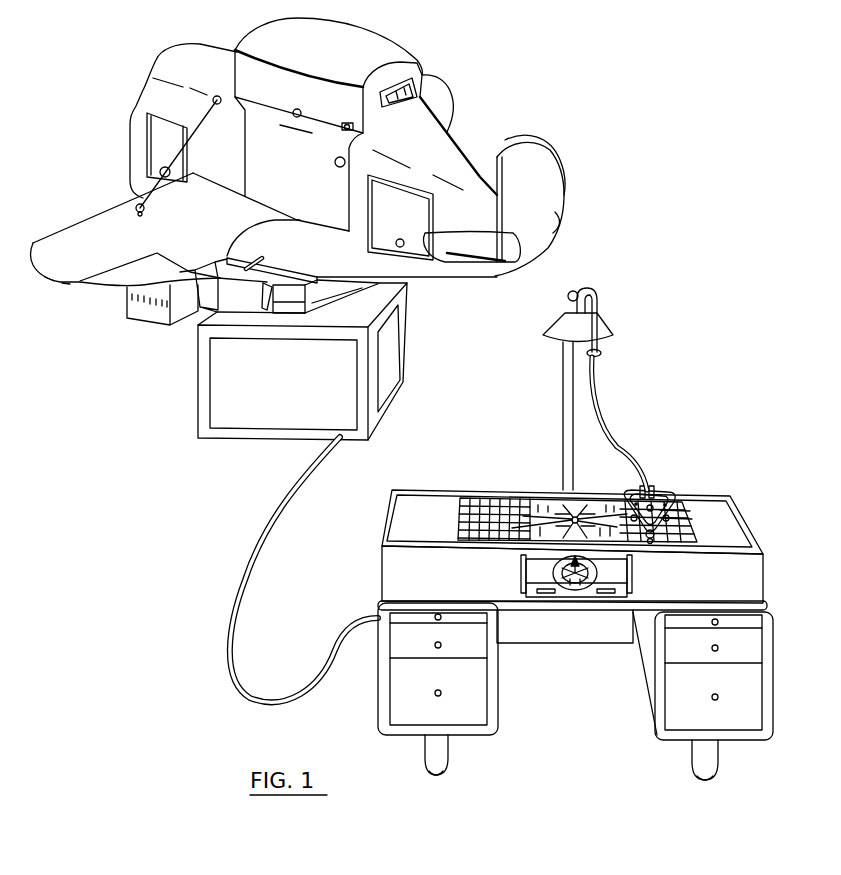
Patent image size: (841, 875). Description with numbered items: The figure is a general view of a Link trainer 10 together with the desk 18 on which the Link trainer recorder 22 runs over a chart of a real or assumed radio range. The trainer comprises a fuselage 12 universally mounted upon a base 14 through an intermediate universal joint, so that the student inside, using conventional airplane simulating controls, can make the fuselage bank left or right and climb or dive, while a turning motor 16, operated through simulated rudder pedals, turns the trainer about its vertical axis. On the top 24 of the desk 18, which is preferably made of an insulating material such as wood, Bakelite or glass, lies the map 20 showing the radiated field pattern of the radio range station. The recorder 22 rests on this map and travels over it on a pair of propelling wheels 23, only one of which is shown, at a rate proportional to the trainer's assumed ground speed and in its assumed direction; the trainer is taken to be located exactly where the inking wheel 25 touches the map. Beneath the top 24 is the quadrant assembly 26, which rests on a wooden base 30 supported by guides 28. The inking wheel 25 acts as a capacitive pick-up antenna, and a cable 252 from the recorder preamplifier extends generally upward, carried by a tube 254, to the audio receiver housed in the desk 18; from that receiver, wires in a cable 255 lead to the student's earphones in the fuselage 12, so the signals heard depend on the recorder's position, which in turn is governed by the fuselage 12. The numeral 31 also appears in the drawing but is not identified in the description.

The Link trainer 10 is at (183, 333).
The fuselage 12 is at (447, 147).
The base 14 is at (217, 370).
The turning motor 16 is at (147, 305).
The desk 18 is at (400, 567).
The map 20 is at (483, 510).
The Link trainer recorder 22 is at (667, 495).
The propelling wheels 23 is at (670, 517).
The top 24 is at (435, 508).
The inking wheel 25 is at (652, 540).
The quadrant assembly 26 is at (578, 589).
The guides 28 is at (632, 568).
The wooden base 30 is at (535, 588).
The slot 31 is at (603, 597).
The cable 252 is at (607, 425).
The tube 254 is at (566, 430).
The cable 255 is at (278, 518).